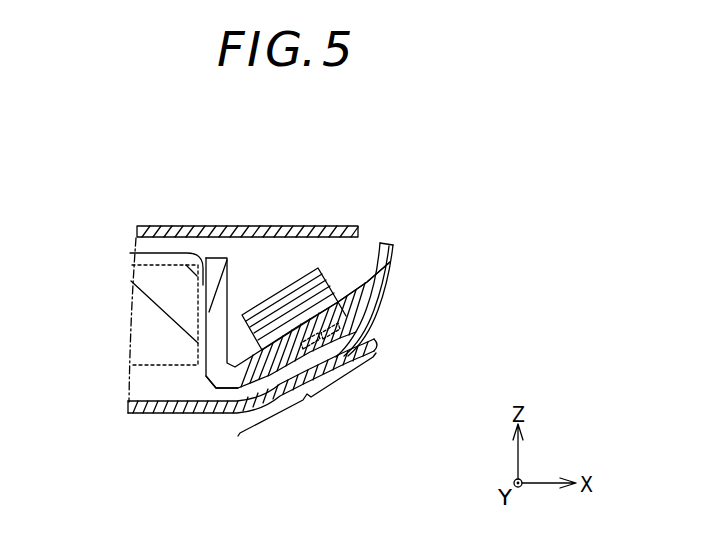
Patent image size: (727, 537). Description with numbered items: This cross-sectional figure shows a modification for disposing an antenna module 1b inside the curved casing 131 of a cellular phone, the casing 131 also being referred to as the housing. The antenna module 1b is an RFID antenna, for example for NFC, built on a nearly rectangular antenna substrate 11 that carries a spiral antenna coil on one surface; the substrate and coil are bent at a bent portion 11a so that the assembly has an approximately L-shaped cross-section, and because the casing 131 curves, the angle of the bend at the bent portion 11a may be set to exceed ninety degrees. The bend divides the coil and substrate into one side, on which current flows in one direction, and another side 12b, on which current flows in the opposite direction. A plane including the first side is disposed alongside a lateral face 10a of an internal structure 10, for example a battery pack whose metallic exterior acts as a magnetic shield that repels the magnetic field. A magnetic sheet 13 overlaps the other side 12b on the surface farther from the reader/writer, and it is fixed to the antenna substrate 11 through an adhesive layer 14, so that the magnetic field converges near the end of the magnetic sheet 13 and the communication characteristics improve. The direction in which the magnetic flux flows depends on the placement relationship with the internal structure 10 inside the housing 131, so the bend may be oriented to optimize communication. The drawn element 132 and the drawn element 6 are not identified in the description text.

The antenna module 1b is at (346, 174).
The upper plate 132 is at (202, 226).
The internal structure 10 is at (156, 278).
The lateral face 10a is at (132, 253).
The antenna substrate 11 is at (333, 314).
The bent portion 11a is at (214, 392).
The magnetic sheet 13 is at (313, 282).
The adhesive layer 14 is at (372, 278).
The curved wall 6 is at (403, 300).
The casing 131 is at (150, 414).
The other side 12b is at (307, 394).